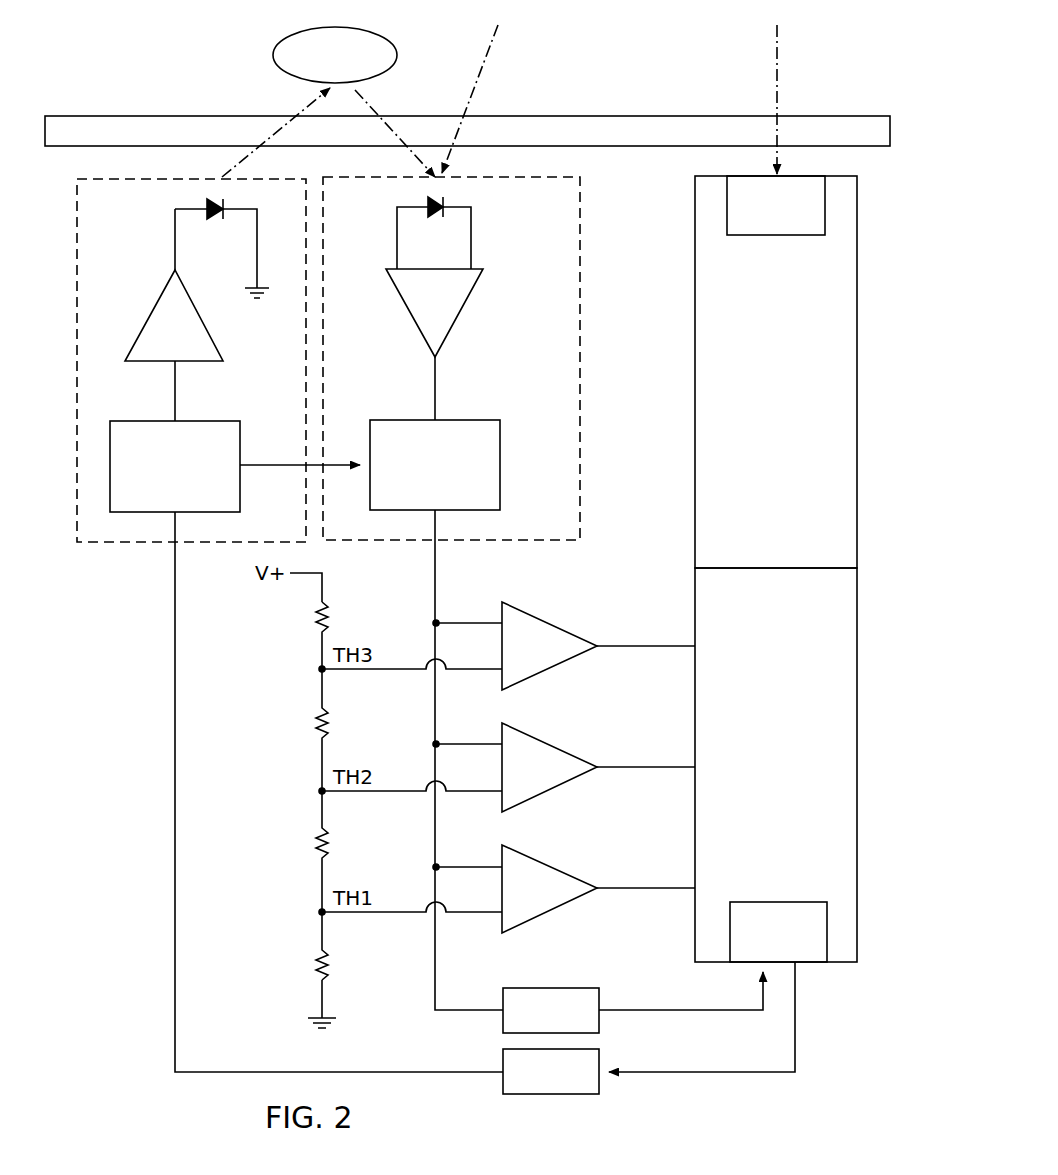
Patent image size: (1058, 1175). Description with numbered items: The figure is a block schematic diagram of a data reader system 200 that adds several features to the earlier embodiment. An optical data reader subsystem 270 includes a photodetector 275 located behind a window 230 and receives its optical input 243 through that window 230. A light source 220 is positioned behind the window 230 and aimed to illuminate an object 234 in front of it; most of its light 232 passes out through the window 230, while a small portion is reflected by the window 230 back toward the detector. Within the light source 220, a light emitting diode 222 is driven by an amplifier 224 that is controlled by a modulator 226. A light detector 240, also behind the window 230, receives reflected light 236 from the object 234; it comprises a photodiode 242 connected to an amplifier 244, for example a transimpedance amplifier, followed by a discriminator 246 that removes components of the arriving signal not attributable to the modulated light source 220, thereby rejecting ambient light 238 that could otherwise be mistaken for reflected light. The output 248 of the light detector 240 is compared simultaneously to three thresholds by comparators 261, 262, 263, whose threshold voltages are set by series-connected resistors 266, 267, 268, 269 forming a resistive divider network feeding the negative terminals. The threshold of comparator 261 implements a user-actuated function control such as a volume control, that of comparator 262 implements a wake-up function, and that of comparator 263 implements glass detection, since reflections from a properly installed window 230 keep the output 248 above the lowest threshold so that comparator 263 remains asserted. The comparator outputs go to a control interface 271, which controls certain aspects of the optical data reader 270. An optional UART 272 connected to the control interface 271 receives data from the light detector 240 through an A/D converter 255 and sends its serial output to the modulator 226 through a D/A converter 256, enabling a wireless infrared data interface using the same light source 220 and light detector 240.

The data reader system 200 is at (138, 86).
The light source 220 is at (156, 546).
The light emitting diode 222 is at (246, 190).
The amplifier 224 is at (220, 342).
The modulator 226 is at (209, 416).
The window 230 is at (655, 112).
The light 232 is at (300, 106).
The object 234 is at (270, 55).
The reflected light 236 is at (370, 105).
The ambient light 238 is at (492, 55).
The light detector 240 is at (586, 230).
The photodiode 242 is at (453, 190).
The optical input 243 is at (782, 80).
The amplifier 244 is at (406, 322).
The discriminator 246 is at (485, 416).
The output 248 is at (440, 598).
The A/D converter 255 is at (553, 985).
The D/A converter 256 is at (551, 1097).
The comparator 261 is at (550, 618).
The comparator 262 is at (550, 738).
The comparator 263 is at (550, 860).
The resistor 266 is at (310, 614).
The resistor 267 is at (310, 721).
The resistor 268 is at (310, 842).
The resistor 269 is at (310, 964).
The optical data reader subsystem 270 is at (685, 358).
The control interface 271 is at (691, 689).
The UART 272 is at (778, 932).
The photodetector 275 is at (776, 205).